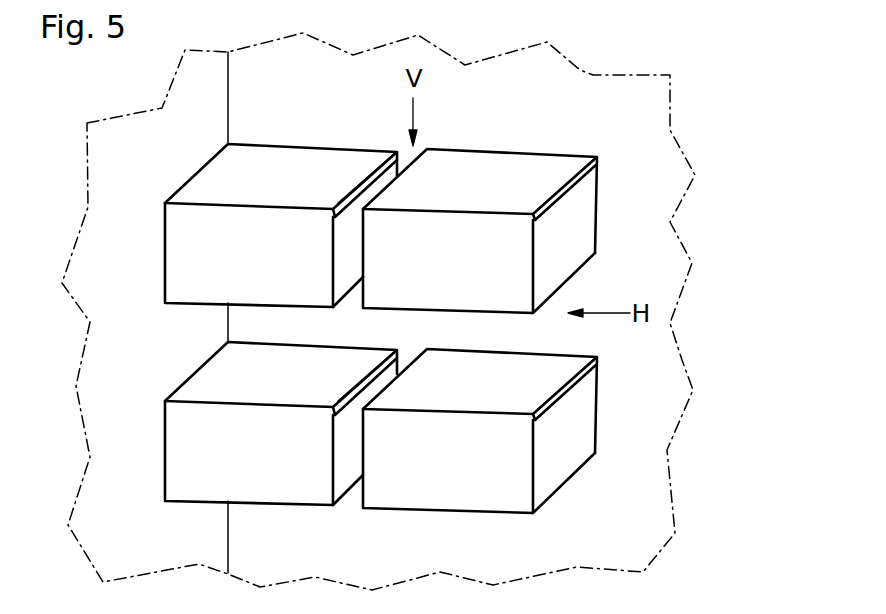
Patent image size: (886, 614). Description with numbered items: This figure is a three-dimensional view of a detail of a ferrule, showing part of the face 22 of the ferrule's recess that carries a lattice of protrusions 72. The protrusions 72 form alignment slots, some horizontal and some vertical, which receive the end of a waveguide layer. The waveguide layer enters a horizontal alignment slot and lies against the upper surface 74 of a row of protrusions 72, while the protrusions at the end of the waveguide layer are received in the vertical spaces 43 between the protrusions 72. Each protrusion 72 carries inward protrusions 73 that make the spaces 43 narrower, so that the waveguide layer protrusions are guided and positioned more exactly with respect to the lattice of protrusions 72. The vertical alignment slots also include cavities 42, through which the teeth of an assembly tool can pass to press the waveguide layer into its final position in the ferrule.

The face 22 is at (643, 363).
The cavities 42 is at (353, 502).
The vertical spaces 43 is at (353, 302).
The protrusions 72 is at (503, 253).
The inward protrusions 73 is at (330, 412).
The upper surface 74 is at (294, 170).